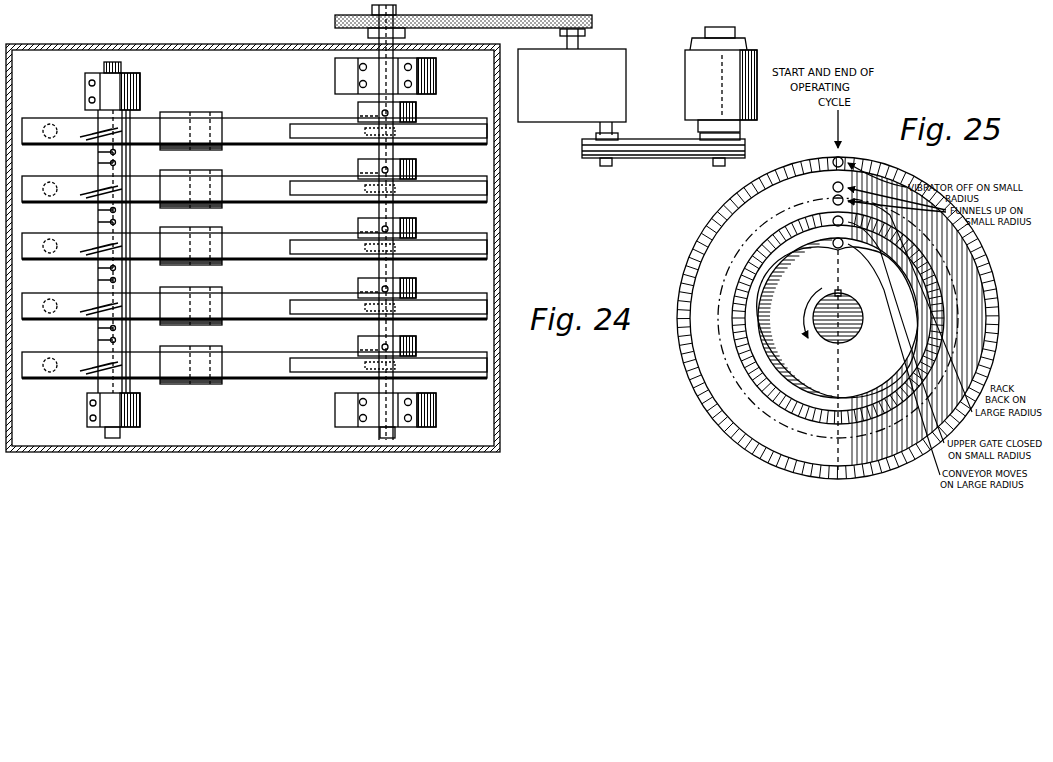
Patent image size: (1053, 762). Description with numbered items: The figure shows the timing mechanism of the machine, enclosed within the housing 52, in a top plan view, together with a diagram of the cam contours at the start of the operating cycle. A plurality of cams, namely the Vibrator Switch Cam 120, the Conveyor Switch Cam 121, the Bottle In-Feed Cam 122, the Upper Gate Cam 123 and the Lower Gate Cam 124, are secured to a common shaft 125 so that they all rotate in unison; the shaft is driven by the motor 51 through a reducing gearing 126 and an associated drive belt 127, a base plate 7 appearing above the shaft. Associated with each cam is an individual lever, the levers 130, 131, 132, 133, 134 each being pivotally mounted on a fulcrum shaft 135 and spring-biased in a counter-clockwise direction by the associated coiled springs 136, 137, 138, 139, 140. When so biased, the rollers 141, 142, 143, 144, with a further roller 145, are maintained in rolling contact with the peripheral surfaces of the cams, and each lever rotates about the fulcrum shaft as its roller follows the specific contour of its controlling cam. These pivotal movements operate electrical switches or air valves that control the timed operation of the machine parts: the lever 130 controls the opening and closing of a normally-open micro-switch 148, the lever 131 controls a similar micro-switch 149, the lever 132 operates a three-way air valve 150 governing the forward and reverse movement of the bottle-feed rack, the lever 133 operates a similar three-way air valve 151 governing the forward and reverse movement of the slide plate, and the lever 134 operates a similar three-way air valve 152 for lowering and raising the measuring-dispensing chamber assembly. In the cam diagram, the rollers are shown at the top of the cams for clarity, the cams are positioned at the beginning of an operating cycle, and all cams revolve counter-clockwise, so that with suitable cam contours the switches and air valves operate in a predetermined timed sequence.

In FIG. 24, the bottle conveyor base plate 7 is at (528, 16).
In FIG. 24, the motor 51 is at (745, 63).
In FIG. 24, the housing 52 is at (498, 214).
In FIG. 24, the Vibrator Switch Cam 120 is at (450, 124).
In FIG. 25, the Vibrator Switch Cam 120 is at (714, 222).
In FIG. 24, the Conveyor Switch Cam 121 is at (454, 181).
In FIG. 25, the Conveyor Switch Cam 121 is at (762, 384).
In FIG. 24, the Bottle In-Feed Cam 122 is at (456, 240).
In FIG. 25, the Bottle In-Feed Cam 122 is at (708, 248).
In FIG. 24, the Upper Gate Cam 123 is at (460, 293).
In FIG. 25, the Upper Gate Cam 123 is at (735, 345).
In FIG. 24, the Lower Gate Cam 124 is at (462, 353).
In FIG. 25, the Lower Gate Cam 124 is at (760, 181).
In FIG. 24, the shaft 125 is at (396, 433).
In FIG. 25, the shaft 125 is at (850, 340).
In FIG. 24, the reducing gearing 126 is at (626, 58).
In FIG. 24, the drive belt 127 is at (652, 140).
In FIG. 24, the lever 130 is at (258, 118).
In FIG. 24, the lever 131 is at (262, 176).
In FIG. 24, the lever 132 is at (278, 229).
In FIG. 24, the lever 133 is at (262, 291).
In FIG. 24, the lever 134 is at (262, 351).
In FIG. 24, the fulcrum shaft 135 is at (122, 66).
In FIG. 24, the coiled spring 136 is at (50, 124).
In FIG. 24, the coiled spring 137 is at (72, 168).
In FIG. 24, the coiled spring 138 is at (70, 232).
In FIG. 24, the coiled spring 139 is at (70, 292).
In FIG. 24, the coiled spring 140 is at (75, 352).
In FIG. 24, the roller 141 is at (398, 138).
In FIG. 25, the roller 141 is at (833, 161).
In FIG. 24, the roller 142 is at (398, 196).
In FIG. 25, the roller 142 is at (838, 249).
In FIG. 24, the roller 143 is at (400, 255).
In FIG. 25, the roller 143 is at (844, 221).
In FIG. 24, the roller 144 is at (400, 314).
In FIG. 25, the roller 144 is at (825, 246).
In FIG. 24, the lower gate cam follower roller 145 is at (400, 378).
In FIG. 25, the lower gate cam follower roller 145 is at (833, 187).
In FIG. 24, the micro-switch 148 is at (182, 112).
In FIG. 24, the micro-switch 149 is at (176, 172).
In FIG. 24, the three-way air valve 150 is at (176, 236).
In FIG. 24, the three-way air valve 151 is at (170, 296).
In FIG. 24, the three-way air valve 152 is at (174, 356).